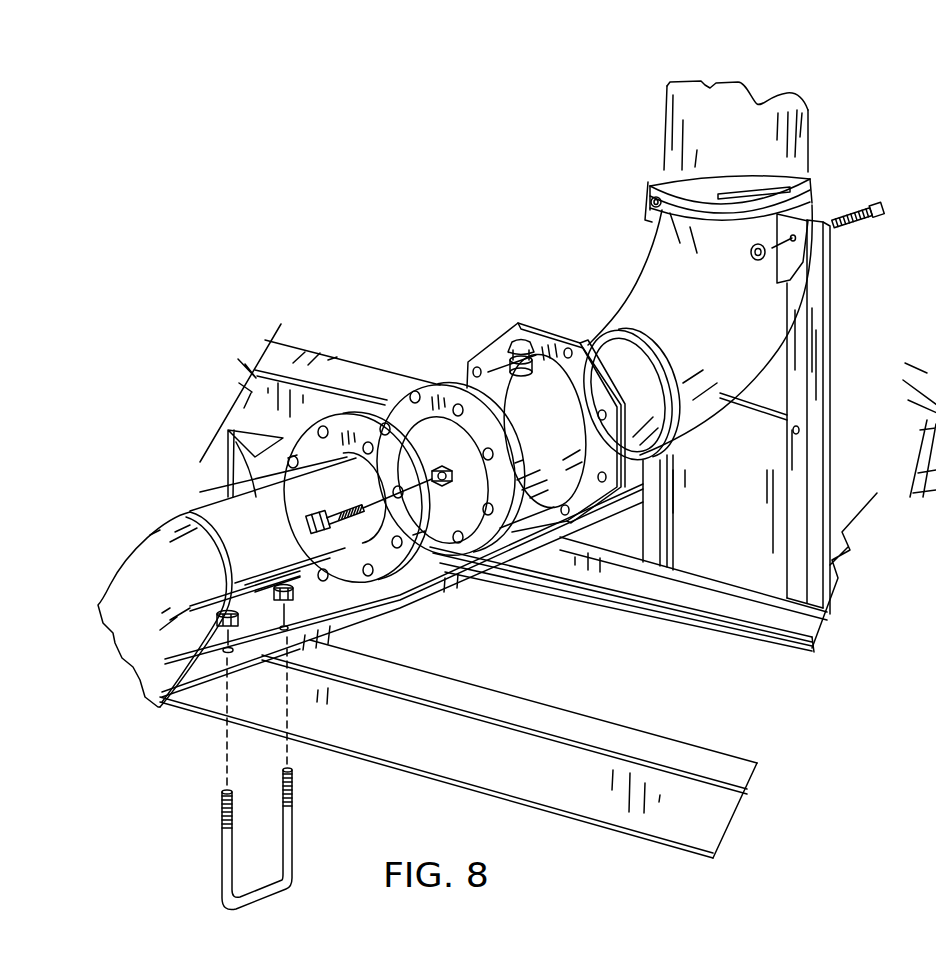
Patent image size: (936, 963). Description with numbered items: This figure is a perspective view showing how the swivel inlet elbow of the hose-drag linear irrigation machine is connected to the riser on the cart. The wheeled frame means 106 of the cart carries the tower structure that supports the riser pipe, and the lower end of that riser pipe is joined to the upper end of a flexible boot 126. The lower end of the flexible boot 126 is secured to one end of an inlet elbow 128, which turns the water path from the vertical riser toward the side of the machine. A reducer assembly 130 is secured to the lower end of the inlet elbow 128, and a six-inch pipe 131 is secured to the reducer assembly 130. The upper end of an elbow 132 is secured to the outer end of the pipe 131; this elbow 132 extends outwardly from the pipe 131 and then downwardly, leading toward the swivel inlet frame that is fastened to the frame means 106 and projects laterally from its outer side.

The frame means 106 is at (613, 723).
The flexible boot 126 is at (775, 122).
The inlet elbow 128 is at (712, 324).
The reducer assembly 130 is at (493, 367).
The 6-inch pipe 131 is at (452, 492).
The elbow 132 is at (167, 550).